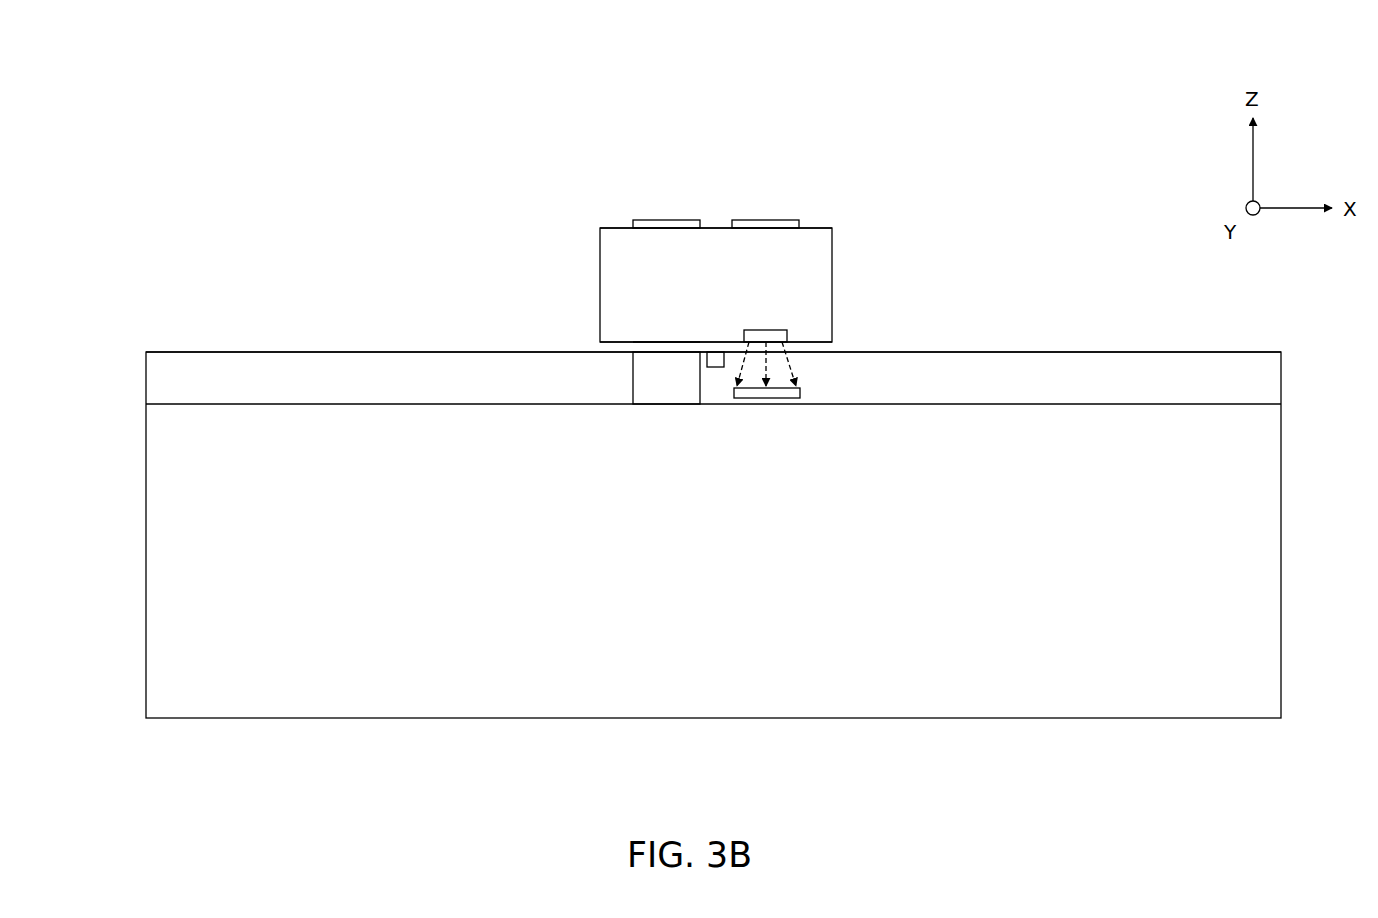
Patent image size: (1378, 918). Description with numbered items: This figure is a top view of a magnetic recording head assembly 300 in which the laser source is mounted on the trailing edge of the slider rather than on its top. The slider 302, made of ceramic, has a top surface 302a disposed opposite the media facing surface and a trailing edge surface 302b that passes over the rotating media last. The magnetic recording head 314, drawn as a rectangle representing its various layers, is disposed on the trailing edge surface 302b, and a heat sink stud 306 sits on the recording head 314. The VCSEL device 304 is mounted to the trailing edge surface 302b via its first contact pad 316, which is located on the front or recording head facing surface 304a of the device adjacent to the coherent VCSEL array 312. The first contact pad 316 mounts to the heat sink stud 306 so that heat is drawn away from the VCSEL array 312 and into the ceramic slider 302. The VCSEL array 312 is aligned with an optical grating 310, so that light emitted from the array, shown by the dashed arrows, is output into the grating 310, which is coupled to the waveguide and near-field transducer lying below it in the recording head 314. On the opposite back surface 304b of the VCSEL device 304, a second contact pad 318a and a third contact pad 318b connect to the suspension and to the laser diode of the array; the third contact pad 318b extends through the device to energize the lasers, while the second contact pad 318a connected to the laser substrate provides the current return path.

The magnetic recording head assembly 300 is at (210, 87).
The slider 302 is at (370, 580).
The top surface 302a is at (1087, 569).
The trailing edge surface 302b is at (366, 352).
The VCSEL device 304 is at (739, 275).
The front surface 304a is at (620, 342).
The back surface 304b is at (822, 228).
The heat sink stud 306 is at (690, 388).
The optical grating 310 is at (802, 397).
The VCSEL array 312 is at (770, 330).
The magnetic recording head 314 is at (718, 352).
The first contact pad 316 is at (667, 342).
The second contact pad 318a is at (660, 220).
The third contact pad 318b is at (765, 220).